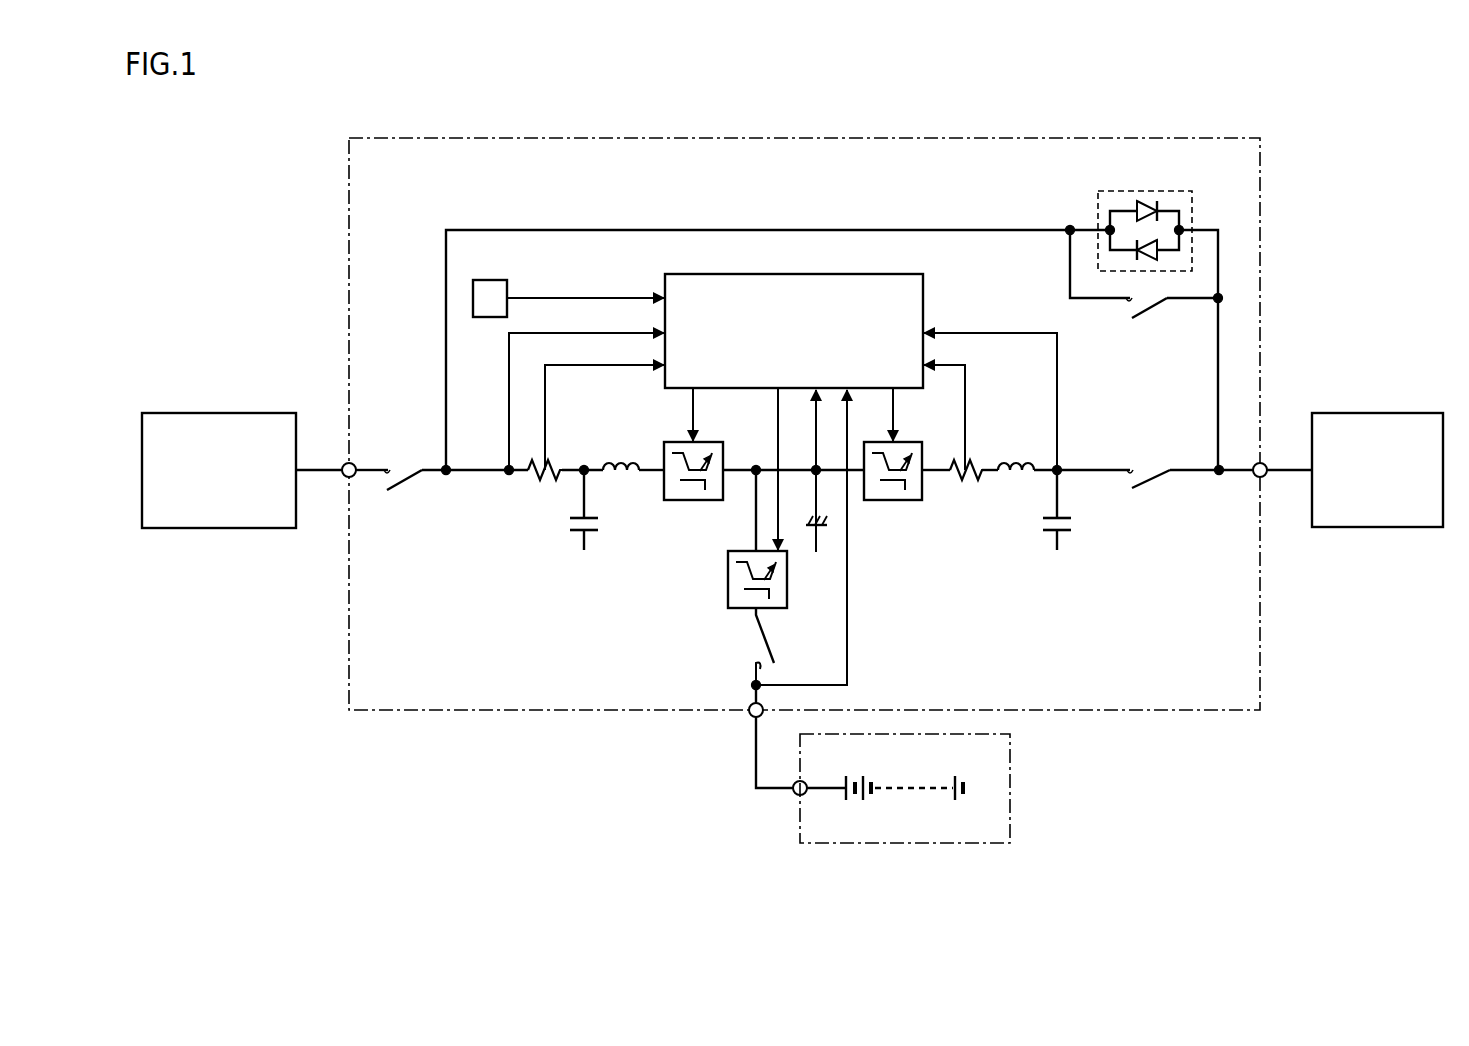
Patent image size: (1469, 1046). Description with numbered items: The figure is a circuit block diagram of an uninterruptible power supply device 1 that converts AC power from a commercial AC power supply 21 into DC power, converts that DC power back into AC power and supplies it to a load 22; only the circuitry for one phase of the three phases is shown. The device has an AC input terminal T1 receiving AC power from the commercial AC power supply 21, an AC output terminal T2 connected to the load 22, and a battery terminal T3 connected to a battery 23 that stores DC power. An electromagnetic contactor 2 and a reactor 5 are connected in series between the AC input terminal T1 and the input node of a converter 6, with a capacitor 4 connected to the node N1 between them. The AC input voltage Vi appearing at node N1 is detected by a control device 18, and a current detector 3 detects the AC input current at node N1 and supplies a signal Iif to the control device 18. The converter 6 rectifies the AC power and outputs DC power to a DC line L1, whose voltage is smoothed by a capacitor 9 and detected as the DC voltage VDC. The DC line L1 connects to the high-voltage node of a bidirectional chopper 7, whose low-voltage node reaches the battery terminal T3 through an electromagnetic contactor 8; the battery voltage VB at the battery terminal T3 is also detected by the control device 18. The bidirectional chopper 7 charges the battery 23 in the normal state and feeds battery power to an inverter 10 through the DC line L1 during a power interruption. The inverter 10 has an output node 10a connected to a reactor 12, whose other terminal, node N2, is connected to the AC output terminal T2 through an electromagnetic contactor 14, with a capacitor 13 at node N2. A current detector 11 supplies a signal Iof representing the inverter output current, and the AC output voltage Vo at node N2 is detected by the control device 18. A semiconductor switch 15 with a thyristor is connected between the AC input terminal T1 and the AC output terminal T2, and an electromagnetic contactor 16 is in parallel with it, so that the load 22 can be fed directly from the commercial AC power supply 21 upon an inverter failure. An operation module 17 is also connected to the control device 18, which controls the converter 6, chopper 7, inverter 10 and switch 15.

The uninterruptible power supply device 1 is at (1208, 137).
The electromagnetic contactor 2 is at (408, 485).
The current detector 3 is at (544, 485).
The capacitor 4 is at (588, 520).
The reactor 5 is at (623, 462).
The converter 6 is at (690, 502).
The bidirectional chopper 7 is at (727, 579).
The electromagnetic contactor 8 is at (763, 640).
The capacitor 9 is at (808, 520).
The inverter 10 is at (905, 453).
The output node 10a is at (924, 484).
The current detector 11 is at (970, 485).
The reactor 12 is at (1018, 462).
The capacitor 13 is at (1062, 521).
The electromagnetic contactor 14 is at (1154, 484).
The semiconductor switch 15 is at (1160, 191).
The electromagnetic contactor 16 is at (1152, 312).
The operation module 17 is at (490, 280).
The control device 18 is at (863, 274).
The commercial AC power supply 21 is at (237, 413).
The load 22 is at (1393, 413).
The battery 23 is at (975, 843).
The AC input terminal T1 is at (344, 464).
The AC output terminal T2 is at (1266, 476).
The battery terminal T3 is at (748, 716).
The node N1 is at (506, 476).
The node N2 is at (1062, 466).
The DC line L1 is at (756, 463).
The AC input voltage Vi is at (506, 409).
The signal Iif is at (548, 409).
The signal Iof is at (968, 384).
The AC output voltage Vo is at (1060, 409).
The DC voltage VDC is at (818, 476).
The battery voltage VB is at (850, 638).